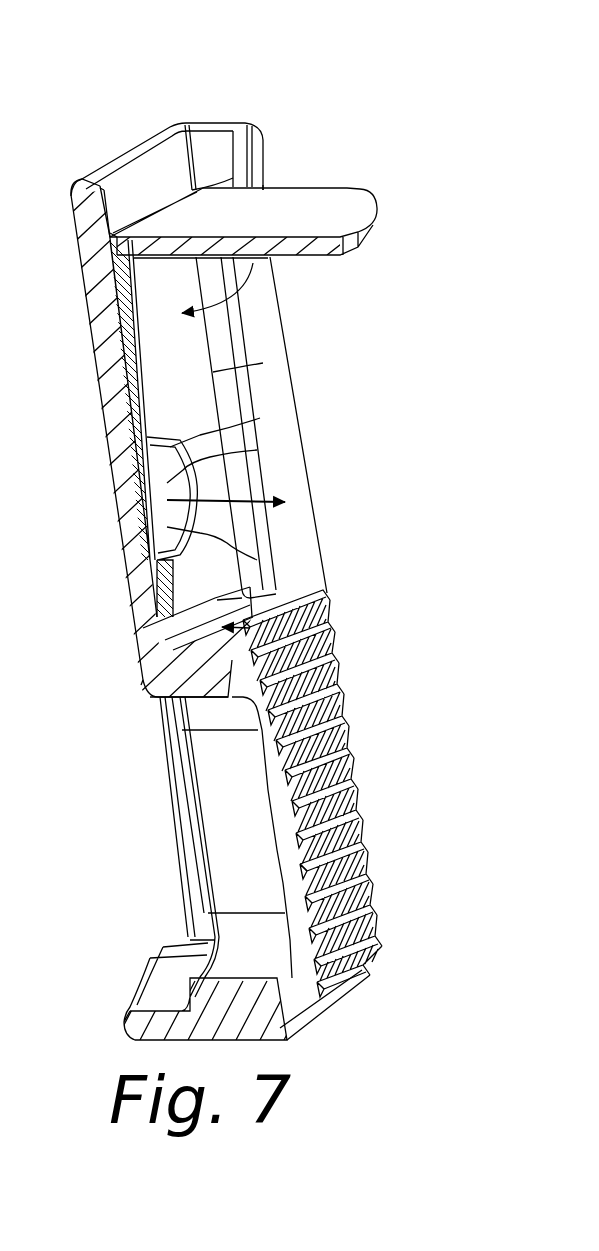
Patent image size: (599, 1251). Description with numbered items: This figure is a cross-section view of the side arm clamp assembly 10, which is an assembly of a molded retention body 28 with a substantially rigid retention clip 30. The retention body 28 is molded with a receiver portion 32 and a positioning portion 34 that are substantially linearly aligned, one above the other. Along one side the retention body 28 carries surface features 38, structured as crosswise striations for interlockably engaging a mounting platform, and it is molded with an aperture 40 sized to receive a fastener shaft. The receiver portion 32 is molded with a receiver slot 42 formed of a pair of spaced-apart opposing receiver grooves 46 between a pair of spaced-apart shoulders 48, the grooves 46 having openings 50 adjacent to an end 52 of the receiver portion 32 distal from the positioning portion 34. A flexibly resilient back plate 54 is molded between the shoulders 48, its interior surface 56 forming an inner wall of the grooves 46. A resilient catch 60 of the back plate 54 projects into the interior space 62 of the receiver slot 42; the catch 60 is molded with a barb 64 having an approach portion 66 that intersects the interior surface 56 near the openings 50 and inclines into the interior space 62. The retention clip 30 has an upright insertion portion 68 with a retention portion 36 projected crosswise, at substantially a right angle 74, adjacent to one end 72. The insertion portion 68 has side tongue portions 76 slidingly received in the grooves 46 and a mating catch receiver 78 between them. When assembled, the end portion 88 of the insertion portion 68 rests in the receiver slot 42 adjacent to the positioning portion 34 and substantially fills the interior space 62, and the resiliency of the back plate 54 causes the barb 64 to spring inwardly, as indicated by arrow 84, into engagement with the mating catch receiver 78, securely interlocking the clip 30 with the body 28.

The side arm clamp 10 is at (115, 95).
The retention body 28 is at (140, 690).
The retention clip 30 is at (377, 220).
The receiver portion 32 is at (316, 524).
The positioning portion 34 is at (170, 950).
The retention portion 36 is at (298, 222).
The surface features 38 is at (353, 720).
The aperture 40 is at (280, 873).
The receiver slot 42 is at (147, 193).
The receiver grooves 46 is at (207, 349).
The shoulders 48 is at (263, 160).
The openings 50 is at (215, 158).
The end 52 is at (70, 185).
The back plate 54 is at (80, 300).
The interior surface 56 is at (262, 181).
The resilient catch 60 is at (153, 525).
The interior space 62 is at (300, 652).
The barb 64 is at (257, 560).
The approach portion 66 is at (257, 450).
The insertion portion 68 is at (203, 407).
The end 72 is at (117, 237).
The right angle 74 is at (252, 264).
The side tongue portions 76 is at (185, 380).
The mating catch receiver 78 is at (260, 418).
The arrow 84 is at (240, 500).
The end portion 88 is at (137, 638).